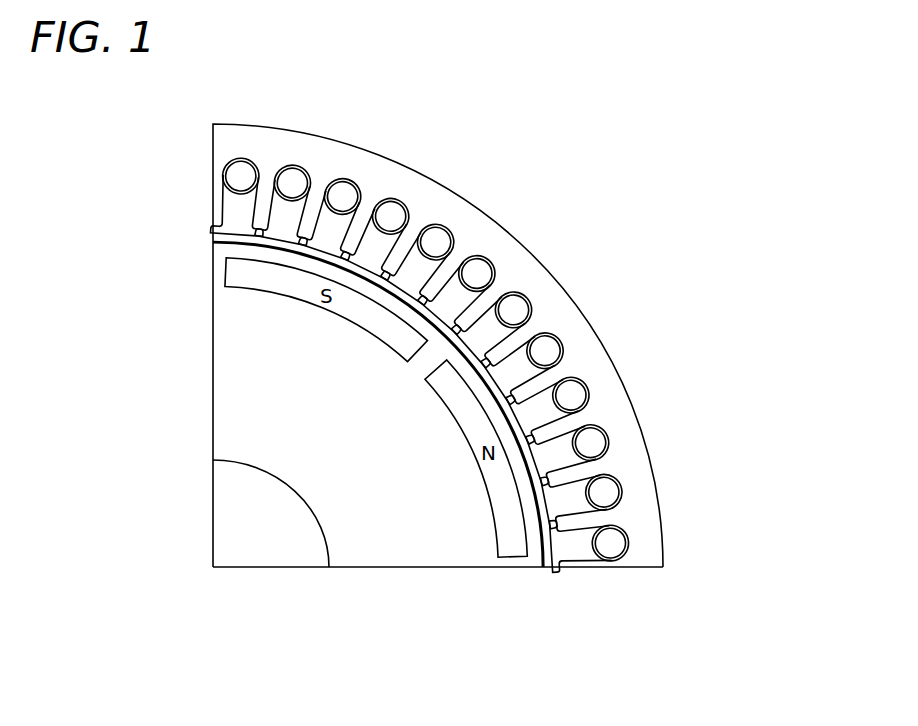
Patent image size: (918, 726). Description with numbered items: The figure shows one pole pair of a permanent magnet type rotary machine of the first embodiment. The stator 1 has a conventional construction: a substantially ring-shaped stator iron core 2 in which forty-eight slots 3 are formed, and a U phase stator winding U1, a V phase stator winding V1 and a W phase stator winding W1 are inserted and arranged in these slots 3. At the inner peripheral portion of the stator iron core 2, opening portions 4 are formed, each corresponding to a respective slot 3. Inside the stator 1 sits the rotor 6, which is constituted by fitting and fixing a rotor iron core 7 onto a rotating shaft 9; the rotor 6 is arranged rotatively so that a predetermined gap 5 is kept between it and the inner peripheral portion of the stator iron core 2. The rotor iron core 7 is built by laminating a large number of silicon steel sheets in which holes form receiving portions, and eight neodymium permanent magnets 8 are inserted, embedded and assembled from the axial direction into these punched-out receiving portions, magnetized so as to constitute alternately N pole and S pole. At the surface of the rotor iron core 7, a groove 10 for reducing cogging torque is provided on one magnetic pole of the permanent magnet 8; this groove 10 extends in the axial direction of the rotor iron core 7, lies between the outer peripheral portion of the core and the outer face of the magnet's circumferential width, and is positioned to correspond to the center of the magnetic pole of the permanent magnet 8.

The stator 1 is at (647, 553).
The stator iron core 2 is at (605, 567).
The slots 3 is at (570, 547).
The opening portions 4 is at (577, 470).
The gap 5 is at (540, 322).
The rotor 6 is at (312, 373).
The rotor iron core 7 is at (312, 404).
The permanent magnets 8 is at (305, 290).
The rotating shaft 9 is at (253, 508).
The groove 10 is at (350, 278).
The U phase stator winding U1 is at (574, 413).
The V phase stator winding V1 is at (488, 240).
The W phase stator winding W1 is at (343, 196).